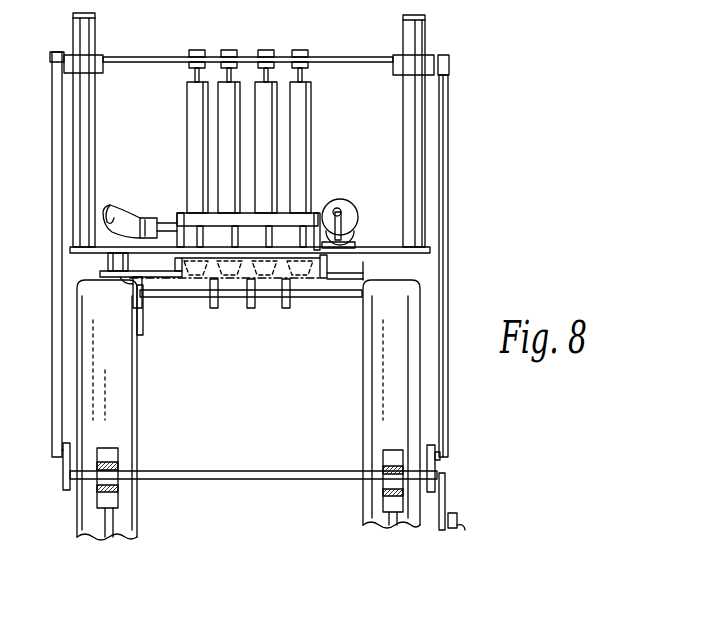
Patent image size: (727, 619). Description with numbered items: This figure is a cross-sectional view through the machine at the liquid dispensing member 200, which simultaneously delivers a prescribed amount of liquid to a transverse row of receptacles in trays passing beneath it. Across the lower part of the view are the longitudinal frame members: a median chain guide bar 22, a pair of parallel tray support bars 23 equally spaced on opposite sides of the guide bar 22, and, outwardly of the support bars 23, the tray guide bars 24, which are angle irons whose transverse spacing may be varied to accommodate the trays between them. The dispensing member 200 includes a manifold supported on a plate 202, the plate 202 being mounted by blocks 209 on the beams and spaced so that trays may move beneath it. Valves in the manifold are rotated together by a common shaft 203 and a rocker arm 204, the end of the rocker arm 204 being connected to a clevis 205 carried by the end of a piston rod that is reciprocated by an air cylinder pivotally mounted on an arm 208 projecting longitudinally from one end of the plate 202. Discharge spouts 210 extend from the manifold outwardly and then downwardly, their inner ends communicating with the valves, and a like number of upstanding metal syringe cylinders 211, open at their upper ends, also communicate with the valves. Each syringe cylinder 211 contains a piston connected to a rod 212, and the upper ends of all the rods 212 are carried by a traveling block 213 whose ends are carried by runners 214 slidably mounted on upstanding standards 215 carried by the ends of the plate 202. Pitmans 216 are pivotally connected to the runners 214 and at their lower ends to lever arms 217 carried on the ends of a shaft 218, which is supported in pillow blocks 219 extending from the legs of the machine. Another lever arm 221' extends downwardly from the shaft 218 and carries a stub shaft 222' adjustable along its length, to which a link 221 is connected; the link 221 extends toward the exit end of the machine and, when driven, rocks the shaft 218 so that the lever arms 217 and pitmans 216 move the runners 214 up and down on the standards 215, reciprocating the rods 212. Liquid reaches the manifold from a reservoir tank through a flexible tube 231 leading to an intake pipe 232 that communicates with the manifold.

The chain guide bar 22 is at (255, 298).
The tray support bar 23 is at (213, 308).
The tray guide bar 24 is at (138, 291).
The liquid dispensing member 200 is at (315, 189).
The plate 202 is at (428, 254).
The common shaft 203 is at (355, 239).
The rocker arm 204 is at (348, 214).
The clevis 205 is at (343, 201).
The arm 208 is at (364, 271).
The block 209 is at (108, 262).
The discharge spout 210 is at (179, 216).
The syringe cylinder 211 is at (270, 148).
The rod 212 is at (258, 63).
The traveling block 213 is at (358, 60).
The runner 214 is at (93, 67).
The standard 215 is at (91, 127).
The pitman 216 is at (61, 172).
The lever arm 217 is at (66, 455).
The shaft 218 is at (246, 472).
The pillow block 219 is at (118, 443).
The link 221 is at (481, 515).
The lever arm 221' is at (474, 501).
The stub shaft 222' is at (484, 536).
The flexible tube 231 is at (105, 222).
The intake pipe 232 is at (123, 208).